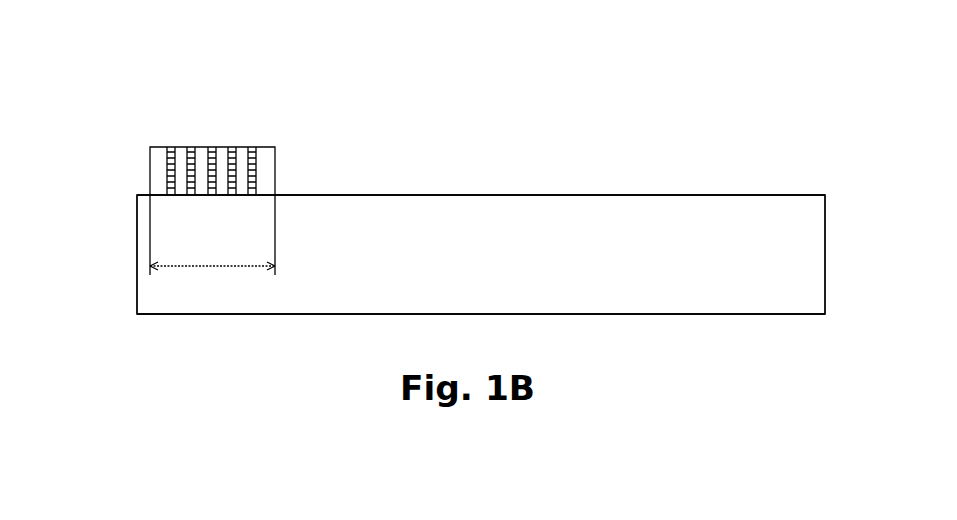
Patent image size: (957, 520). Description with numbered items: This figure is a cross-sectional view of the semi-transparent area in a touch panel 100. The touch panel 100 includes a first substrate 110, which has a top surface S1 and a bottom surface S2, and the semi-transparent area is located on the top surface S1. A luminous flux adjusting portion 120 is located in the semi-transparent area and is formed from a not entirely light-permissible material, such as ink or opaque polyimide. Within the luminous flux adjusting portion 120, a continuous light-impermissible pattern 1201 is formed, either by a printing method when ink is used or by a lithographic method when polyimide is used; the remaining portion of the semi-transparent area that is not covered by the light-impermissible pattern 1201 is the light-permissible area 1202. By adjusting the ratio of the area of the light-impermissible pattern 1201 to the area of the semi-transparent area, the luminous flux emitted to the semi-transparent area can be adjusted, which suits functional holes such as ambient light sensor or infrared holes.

The touch panel 100 is at (711, 108).
The first substrate 110 is at (144, 261).
The top surface S1 is at (718, 195).
The bottom surface S2 is at (717, 315).
The luminous flux adjusting portion 120 is at (229, 189).
The light-impermissible pattern 1201 is at (258, 172).
The light-permissible area 1202 is at (203, 185).